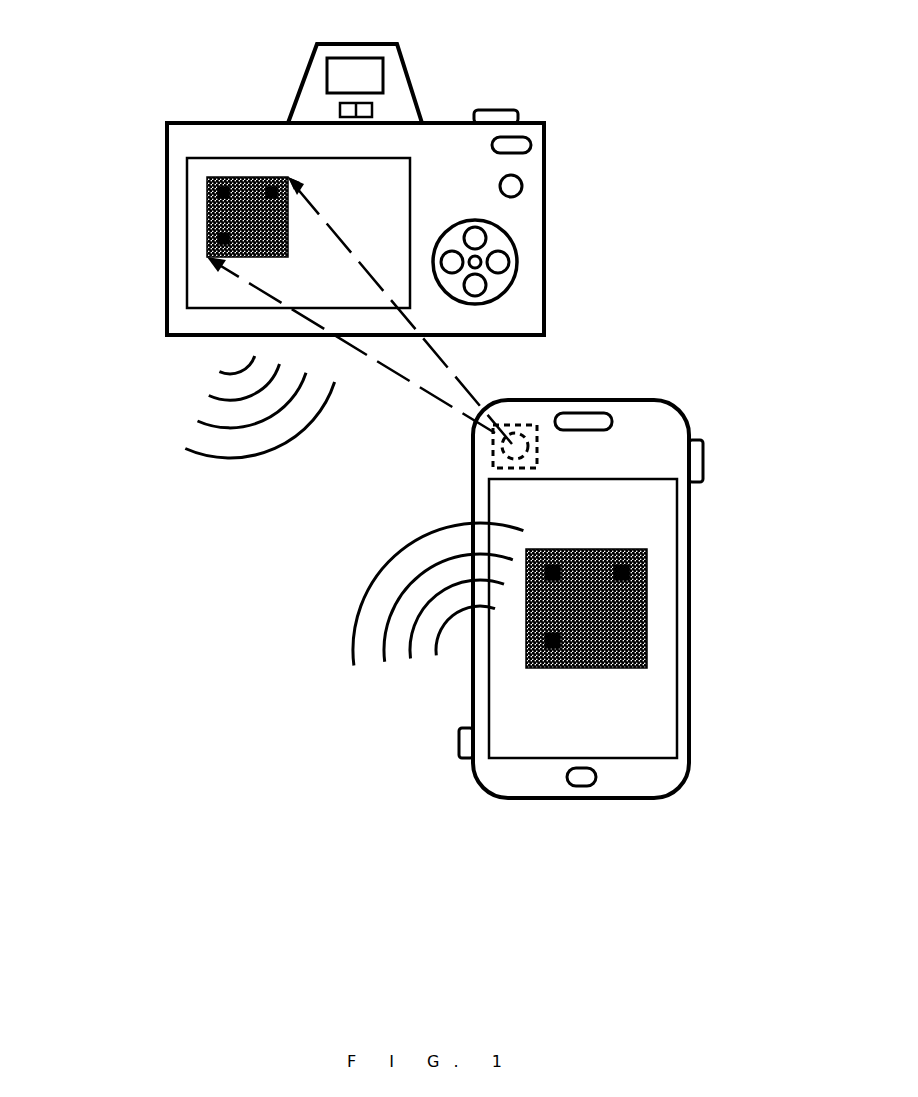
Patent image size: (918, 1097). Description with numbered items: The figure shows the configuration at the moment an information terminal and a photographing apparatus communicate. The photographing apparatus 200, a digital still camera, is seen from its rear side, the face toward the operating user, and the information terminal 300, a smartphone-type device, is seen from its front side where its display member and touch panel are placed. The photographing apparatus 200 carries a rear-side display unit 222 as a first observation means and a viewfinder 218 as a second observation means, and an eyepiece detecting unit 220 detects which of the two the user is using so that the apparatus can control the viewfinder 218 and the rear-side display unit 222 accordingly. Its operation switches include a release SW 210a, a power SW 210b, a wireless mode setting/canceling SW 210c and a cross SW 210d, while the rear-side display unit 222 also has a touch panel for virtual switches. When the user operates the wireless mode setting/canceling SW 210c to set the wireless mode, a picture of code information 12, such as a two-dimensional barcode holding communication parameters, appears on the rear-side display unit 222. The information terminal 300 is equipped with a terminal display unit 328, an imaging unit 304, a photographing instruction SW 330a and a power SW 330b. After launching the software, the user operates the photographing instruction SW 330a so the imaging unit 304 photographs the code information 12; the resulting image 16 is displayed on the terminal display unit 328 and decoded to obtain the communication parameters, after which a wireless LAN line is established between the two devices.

The photographing apparatus 200 is at (200, 79).
The viewfinder 218 is at (327, 73).
The eyepiece detecting unit 220 is at (338, 110).
The rear-side display unit 222 is at (192, 162).
The code information 12 is at (208, 222).
The release SW 210a is at (497, 108).
The power SW 210b is at (531, 152).
The wireless mode setting/canceling SW 210c is at (523, 197).
The cross SW 210d is at (515, 243).
The information terminal 300 is at (710, 345).
The photographing instruction SW 330a is at (703, 452).
The power SW 330b is at (460, 735).
The imaging unit 304 is at (493, 457).
The terminal display unit 328 is at (490, 500).
The image 16 is at (648, 652).